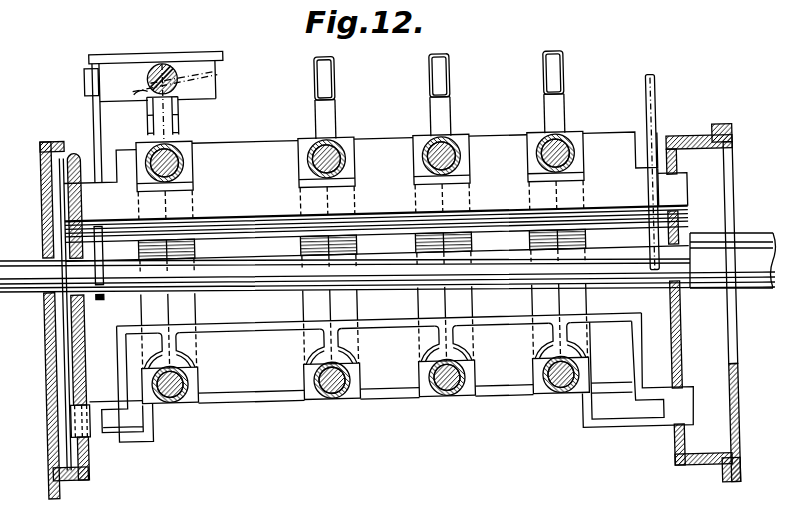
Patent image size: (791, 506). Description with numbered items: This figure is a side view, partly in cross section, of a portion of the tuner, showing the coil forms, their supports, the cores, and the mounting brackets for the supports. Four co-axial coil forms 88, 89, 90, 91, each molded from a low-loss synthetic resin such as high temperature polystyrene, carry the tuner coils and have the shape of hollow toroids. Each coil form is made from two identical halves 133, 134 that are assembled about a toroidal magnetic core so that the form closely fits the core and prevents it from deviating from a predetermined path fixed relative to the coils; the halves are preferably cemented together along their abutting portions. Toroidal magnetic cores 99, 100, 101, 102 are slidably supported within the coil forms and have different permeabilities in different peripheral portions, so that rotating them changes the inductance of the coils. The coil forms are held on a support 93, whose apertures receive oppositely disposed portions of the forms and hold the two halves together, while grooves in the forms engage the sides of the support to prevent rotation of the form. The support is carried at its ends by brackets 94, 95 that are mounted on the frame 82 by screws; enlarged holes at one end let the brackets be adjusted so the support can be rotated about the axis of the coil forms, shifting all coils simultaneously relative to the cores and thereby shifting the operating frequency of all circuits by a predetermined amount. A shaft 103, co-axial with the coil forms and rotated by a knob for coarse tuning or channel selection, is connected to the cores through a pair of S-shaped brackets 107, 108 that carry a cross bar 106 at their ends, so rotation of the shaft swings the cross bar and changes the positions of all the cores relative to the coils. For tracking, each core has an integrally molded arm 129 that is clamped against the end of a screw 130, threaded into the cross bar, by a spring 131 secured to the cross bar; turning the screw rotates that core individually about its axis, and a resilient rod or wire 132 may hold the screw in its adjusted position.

The frame 82 is at (735, 430).
The coil form 88 is at (189, 139).
The coil form 89 is at (307, 142).
The coil form 90 is at (424, 140).
The coil form 91 is at (536, 141).
The support 93 is at (601, 437).
The bracket 94 is at (81, 360).
The bracket 95 is at (679, 343).
The toroidal magnetic core 99 is at (181, 380).
The toroidal magnetic core 100 is at (337, 377).
The toroidal magnetic core 101 is at (449, 378).
The toroidal magnetic core 102 is at (571, 377).
The shaft 103 is at (600, 278).
The cross bar 106 is at (113, 48).
The S-shaped bracket 107 is at (105, 130).
The S-shaped bracket 108 is at (655, 117).
The arm 129 is at (169, 111).
The screw 130 is at (178, 60).
The spring 131 is at (152, 113).
The resilient rod or wire 132 is at (215, 80).
The coil form half 133 is at (160, 392).
The coil form half 134 is at (182, 393).